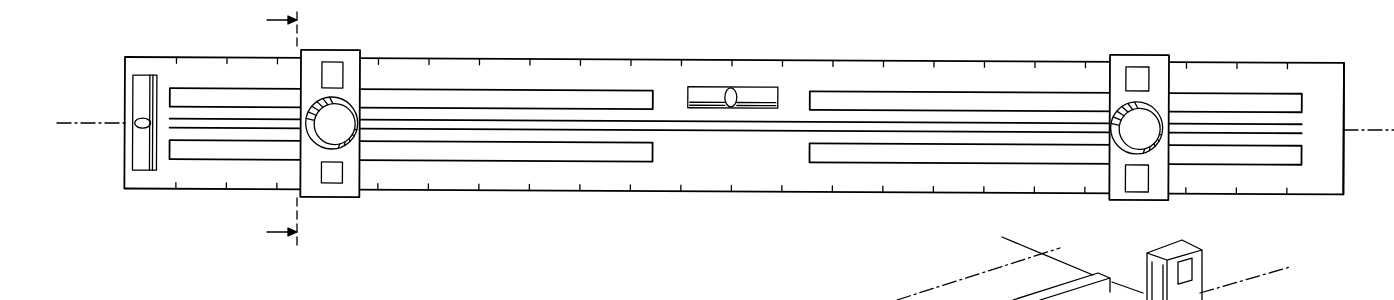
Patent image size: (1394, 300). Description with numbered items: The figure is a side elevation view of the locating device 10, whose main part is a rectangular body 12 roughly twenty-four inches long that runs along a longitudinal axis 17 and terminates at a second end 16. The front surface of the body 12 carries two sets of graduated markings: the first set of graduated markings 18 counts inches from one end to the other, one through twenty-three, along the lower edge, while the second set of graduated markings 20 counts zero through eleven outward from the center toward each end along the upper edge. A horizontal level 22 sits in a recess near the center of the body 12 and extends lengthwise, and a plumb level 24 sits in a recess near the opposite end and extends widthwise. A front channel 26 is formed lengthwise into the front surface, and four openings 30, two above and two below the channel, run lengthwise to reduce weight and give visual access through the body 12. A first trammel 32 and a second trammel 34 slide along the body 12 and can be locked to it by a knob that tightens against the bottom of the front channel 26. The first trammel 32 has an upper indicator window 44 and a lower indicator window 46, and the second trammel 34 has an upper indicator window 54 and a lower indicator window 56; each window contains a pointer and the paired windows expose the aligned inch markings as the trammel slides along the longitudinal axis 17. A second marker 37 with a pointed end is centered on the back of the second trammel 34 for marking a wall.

The locating device 10 is at (183, 262).
The rectangular body 12 is at (708, 163).
The second end 16 is at (1344, 163).
The longitudinal axis 17 is at (82, 110).
The first set of graduated markings 18 is at (1302, 180).
The second set of graduated markings 20 is at (1304, 76).
The horizontal level 22 is at (702, 92).
The plumb level 24 is at (140, 93).
The front channel 26 is at (552, 128).
The openings 30 is at (551, 100).
The first trammel 32 is at (353, 199).
The second trammel 34 is at (1114, 56).
The second marker 37 is at (1143, 296).
The upper indicator window 44 is at (346, 62).
The lower indicator window 46 is at (331, 185).
The upper indicator window 54 is at (1147, 72).
The lower indicator window 56 is at (1141, 193).